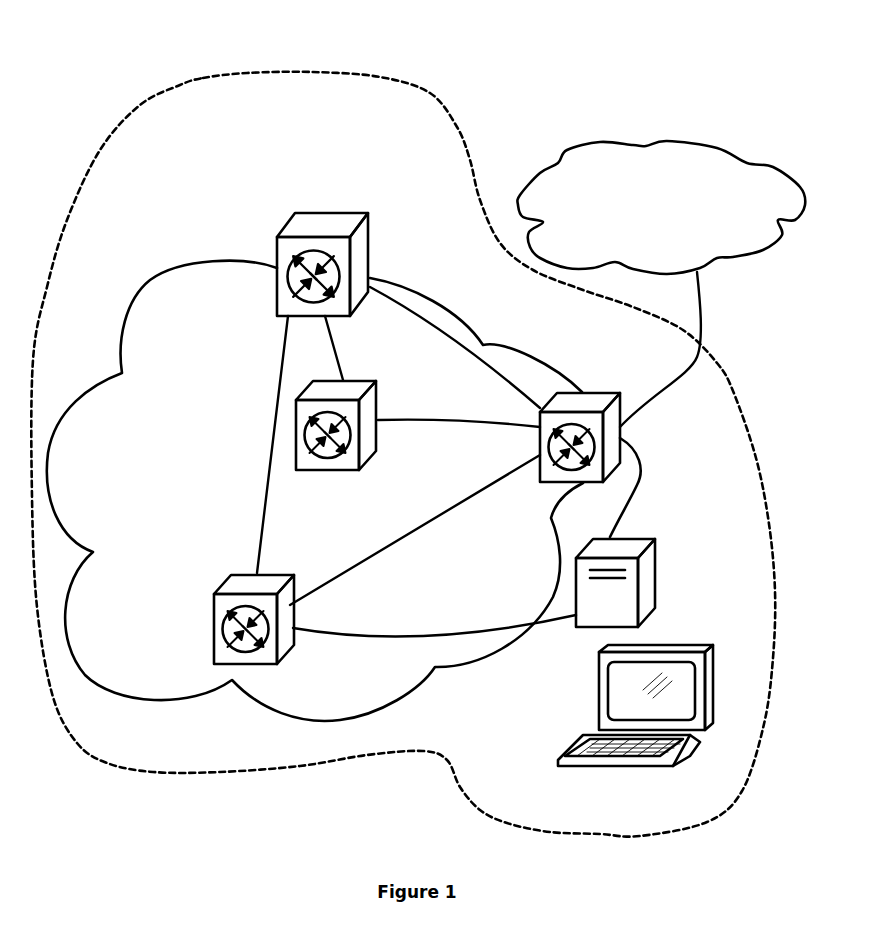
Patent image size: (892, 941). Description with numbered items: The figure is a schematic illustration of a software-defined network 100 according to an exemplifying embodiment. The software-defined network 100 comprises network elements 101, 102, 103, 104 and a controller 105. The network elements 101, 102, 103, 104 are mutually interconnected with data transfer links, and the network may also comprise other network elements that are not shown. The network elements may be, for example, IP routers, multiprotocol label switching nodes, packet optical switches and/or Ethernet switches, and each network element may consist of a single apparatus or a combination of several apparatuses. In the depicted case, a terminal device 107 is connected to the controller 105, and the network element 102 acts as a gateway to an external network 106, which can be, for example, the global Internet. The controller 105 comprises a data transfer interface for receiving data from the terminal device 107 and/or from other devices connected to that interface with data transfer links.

The software-defined network 100 is at (203, 78).
The network element 101 is at (214, 654).
The network element 102 is at (596, 398).
The network element 103 is at (363, 381).
The network element 104 is at (283, 237).
The controller 105 is at (632, 545).
The external network 106 is at (661, 207).
The terminal device 107 is at (665, 645).